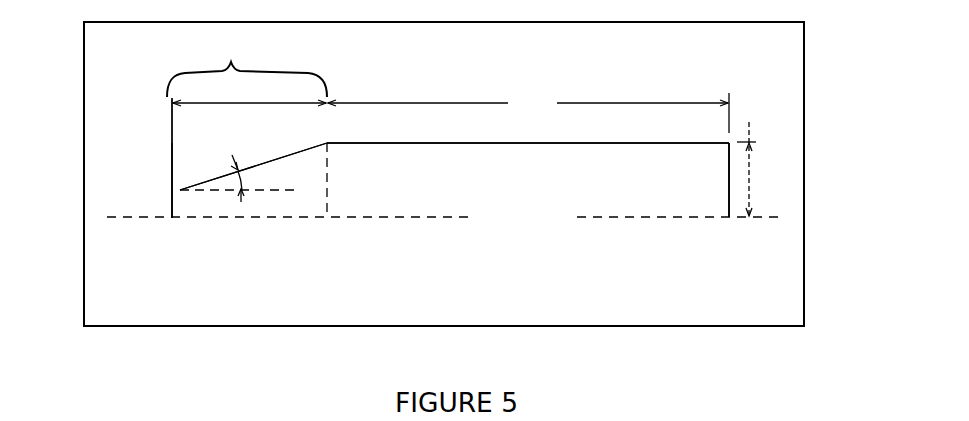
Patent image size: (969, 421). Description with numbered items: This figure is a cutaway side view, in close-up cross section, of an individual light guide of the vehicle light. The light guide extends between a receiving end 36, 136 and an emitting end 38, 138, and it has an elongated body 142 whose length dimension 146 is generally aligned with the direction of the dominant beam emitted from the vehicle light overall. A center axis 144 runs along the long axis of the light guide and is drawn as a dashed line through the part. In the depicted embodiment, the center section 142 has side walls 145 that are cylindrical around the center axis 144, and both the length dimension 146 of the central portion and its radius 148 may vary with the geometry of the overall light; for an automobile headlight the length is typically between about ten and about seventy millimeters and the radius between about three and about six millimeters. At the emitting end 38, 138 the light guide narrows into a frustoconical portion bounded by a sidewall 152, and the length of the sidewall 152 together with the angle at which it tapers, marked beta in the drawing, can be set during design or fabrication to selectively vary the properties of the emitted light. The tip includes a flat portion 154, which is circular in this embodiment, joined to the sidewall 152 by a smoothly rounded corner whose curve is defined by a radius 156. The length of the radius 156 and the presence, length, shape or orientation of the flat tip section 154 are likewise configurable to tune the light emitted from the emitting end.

The emitting end 38 is at (247, 124).
The emitting end 138 is at (249, 158).
The receiving end 36 is at (729, 180).
The receiving end 136 is at (818, 175).
The elongated body 142 is at (528, 180).
The center axis 144 is at (630, 222).
The side walls 145 is at (384, 143).
The length dimension 146 is at (528, 111).
The radius 148 is at (759, 153).
The sidewall 152 is at (296, 154).
The flat portion 154 is at (164, 208).
The radius 156 is at (178, 195).